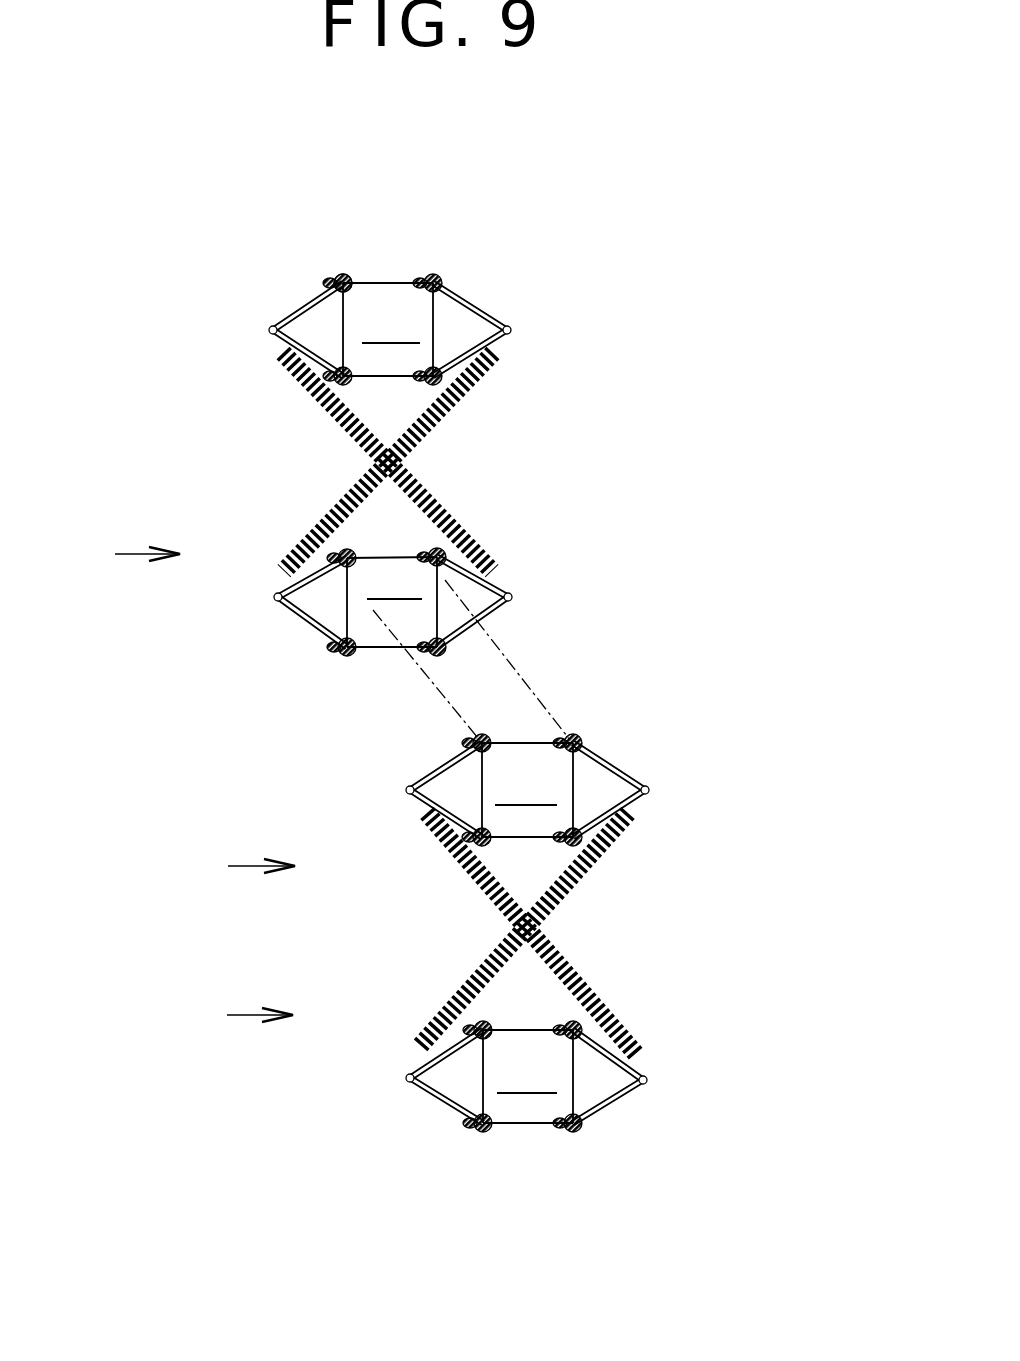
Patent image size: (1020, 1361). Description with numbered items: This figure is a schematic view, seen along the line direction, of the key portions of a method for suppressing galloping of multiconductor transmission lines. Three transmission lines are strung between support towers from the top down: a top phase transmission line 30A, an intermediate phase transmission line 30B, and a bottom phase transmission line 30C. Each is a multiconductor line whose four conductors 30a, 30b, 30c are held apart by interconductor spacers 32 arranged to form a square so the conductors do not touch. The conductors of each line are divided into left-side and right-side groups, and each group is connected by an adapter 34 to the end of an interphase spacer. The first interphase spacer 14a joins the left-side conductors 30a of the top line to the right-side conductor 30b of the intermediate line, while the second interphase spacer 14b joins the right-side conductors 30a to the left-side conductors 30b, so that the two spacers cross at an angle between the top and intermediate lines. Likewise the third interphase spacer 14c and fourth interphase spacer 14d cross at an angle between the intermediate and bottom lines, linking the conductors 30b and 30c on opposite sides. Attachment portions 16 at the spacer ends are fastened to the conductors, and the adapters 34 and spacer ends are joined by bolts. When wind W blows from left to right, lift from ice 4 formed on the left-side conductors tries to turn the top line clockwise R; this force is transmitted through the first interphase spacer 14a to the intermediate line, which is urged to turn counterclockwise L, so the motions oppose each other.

The ice 4 is at (327, 277).
The first interphase spacer 14a is at (327, 407).
The second interphase spacer 14b is at (443, 430).
The third interphase spacer 14c is at (500, 915).
The fourth interphase spacer 14d is at (553, 923).
The attachment portion 16 is at (633, 1057).
The interconductor spacer 32 is at (517, 1127).
The adapter 34 is at (620, 1103).
The conductor 30a is at (428, 376).
The conductor 30b is at (578, 755).
The conductor 30c is at (578, 1042).
The top phase transmission line 30A is at (388, 329).
The intermediate phase transmission line 30B is at (460, 697).
The bottom phase transmission line 30C is at (528, 1076).
The clockwise direction R is at (340, 262).
The counterclockwise direction L is at (535, 522).
The wind W is at (180, 400).